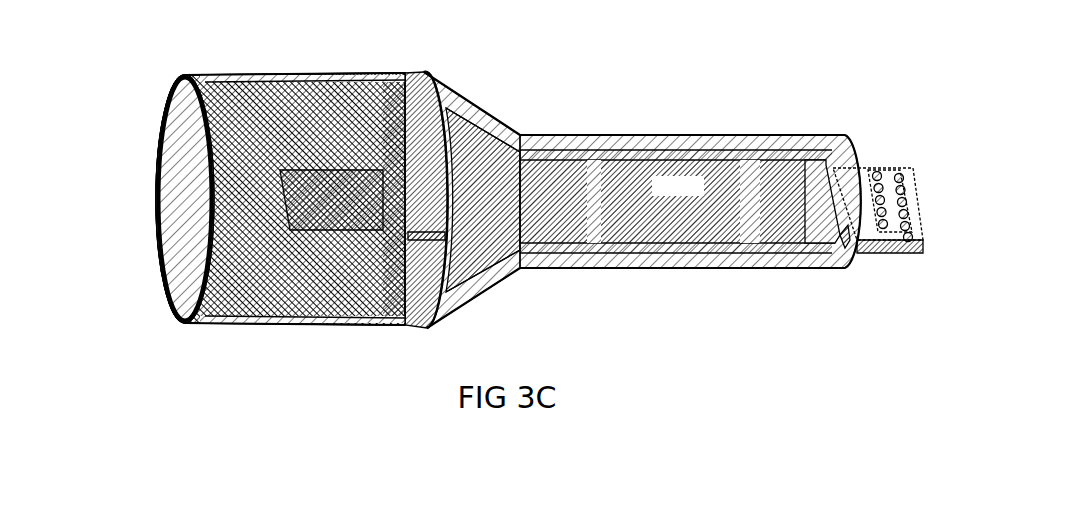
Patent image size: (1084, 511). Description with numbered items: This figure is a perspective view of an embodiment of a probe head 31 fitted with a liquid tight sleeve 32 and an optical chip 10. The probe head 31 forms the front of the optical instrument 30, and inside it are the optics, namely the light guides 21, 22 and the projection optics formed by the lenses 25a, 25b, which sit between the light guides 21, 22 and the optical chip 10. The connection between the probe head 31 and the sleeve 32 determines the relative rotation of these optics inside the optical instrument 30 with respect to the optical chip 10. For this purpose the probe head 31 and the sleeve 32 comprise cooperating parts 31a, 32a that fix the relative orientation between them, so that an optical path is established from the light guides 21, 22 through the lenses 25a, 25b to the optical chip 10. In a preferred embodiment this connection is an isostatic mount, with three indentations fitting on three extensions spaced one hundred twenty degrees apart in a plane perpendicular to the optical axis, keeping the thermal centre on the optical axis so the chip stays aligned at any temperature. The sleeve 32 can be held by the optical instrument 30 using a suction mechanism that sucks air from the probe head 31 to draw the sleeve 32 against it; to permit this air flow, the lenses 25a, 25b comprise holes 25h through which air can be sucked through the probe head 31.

The optical chip 10 is at (912, 276).
The light guide 21 is at (300, 226).
The light guide 22 is at (338, 247).
The lens 25a is at (577, 245).
The lens 25b is at (735, 245).
The holes 25h is at (606, 186).
The optical instrument 30 is at (295, 226).
The probe head 31 is at (550, 157).
The cooperating part 31a is at (836, 232).
The liquid tight sleeve 32 is at (655, 143).
The cooperating part 32a is at (848, 232).